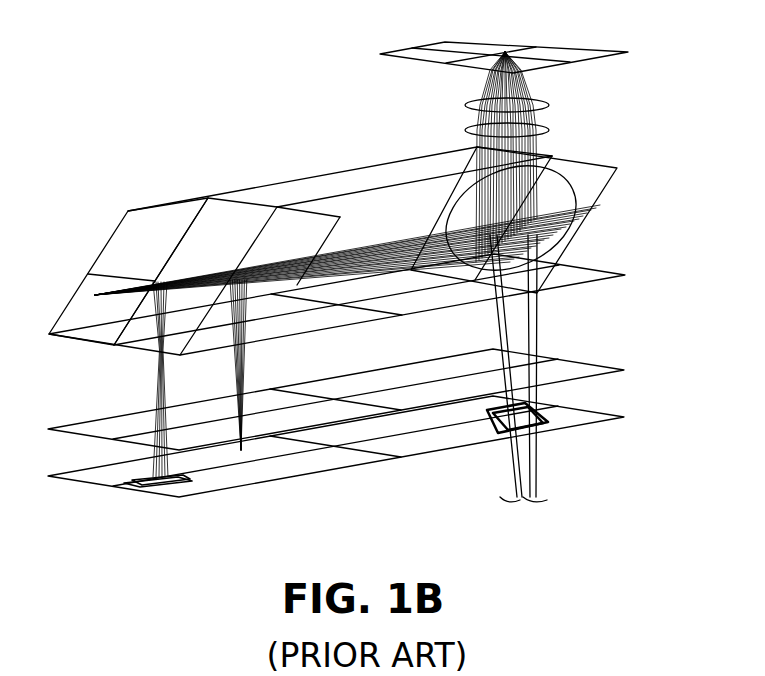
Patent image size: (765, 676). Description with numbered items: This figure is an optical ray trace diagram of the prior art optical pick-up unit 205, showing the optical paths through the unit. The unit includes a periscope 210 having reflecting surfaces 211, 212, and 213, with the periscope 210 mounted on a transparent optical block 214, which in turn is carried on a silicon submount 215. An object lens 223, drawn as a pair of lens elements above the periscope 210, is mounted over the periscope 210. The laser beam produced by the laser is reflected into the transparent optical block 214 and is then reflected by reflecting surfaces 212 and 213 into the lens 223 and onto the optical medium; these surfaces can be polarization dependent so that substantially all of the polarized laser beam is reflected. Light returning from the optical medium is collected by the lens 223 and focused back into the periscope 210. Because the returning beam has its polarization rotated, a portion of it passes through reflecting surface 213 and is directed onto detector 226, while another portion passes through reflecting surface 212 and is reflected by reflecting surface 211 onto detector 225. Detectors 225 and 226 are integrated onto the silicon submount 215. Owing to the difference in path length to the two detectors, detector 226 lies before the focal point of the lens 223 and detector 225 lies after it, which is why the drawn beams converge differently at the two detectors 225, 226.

The prior art optical system / micromirror array 205 is at (316, 144).
The periscope 210 is at (598, 200).
The reflecting surface 211 is at (114, 234).
The reflecting surface 212 is at (238, 196).
The reflecting surface 213 is at (573, 238).
The transparent optical block 214 is at (587, 323).
The silicon submount 215 is at (590, 431).
The object lens 223 is at (546, 118).
The detector 225 is at (148, 487).
The detector 226 is at (572, 404).